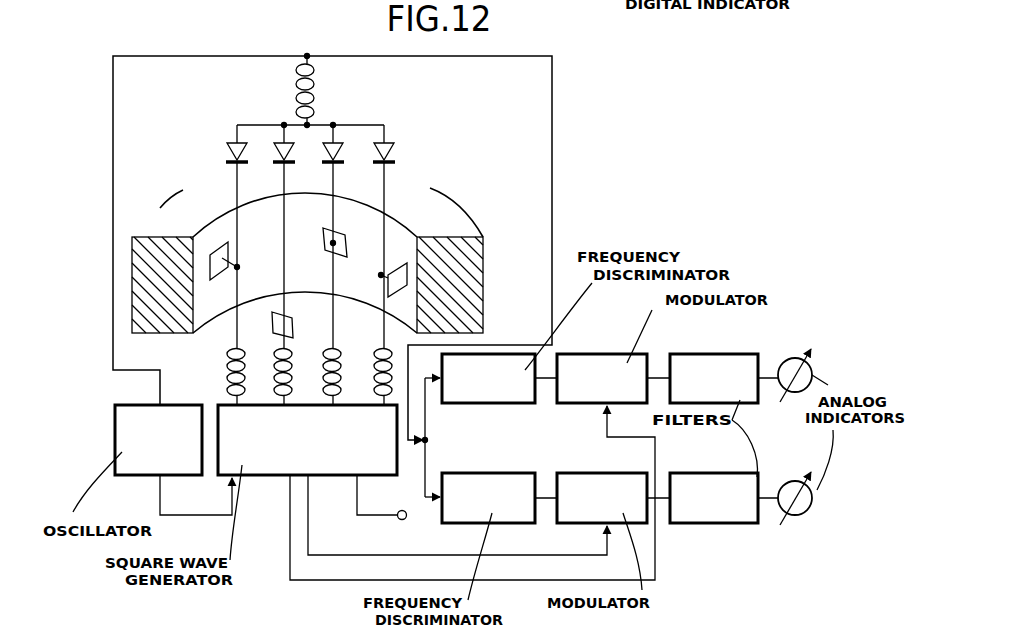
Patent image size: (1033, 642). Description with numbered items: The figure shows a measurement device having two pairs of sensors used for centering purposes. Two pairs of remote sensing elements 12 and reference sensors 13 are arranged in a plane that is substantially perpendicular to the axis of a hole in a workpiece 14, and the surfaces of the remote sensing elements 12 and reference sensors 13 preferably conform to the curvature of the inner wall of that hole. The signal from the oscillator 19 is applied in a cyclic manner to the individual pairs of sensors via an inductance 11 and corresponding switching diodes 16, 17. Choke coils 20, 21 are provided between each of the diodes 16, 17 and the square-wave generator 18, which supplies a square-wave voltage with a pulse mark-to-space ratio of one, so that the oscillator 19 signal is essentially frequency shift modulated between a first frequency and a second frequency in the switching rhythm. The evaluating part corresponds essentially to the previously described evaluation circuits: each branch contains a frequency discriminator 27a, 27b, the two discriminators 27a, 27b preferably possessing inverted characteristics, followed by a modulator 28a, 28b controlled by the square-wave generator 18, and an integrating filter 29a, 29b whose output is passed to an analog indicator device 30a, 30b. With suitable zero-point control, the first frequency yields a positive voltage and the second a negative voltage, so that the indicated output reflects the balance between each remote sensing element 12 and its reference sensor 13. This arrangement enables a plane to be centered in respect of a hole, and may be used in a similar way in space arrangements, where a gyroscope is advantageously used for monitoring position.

The inductance 11 is at (313, 100).
The remote sensing elements 12 is at (224, 259).
The reference sensors 13 is at (330, 242).
The workpiece 14 is at (478, 277).
The switching diode 16 is at (227, 151).
The switching diode 17 is at (275, 153).
The square-wave generator 18 is at (280, 460).
The oscillator 19 is at (152, 442).
The choke coil 20 is at (227, 375).
The choke coil 21 is at (268, 348).
The frequency discriminator 27a is at (472, 390).
The frequency discriminator 27b is at (468, 487).
The modulator 28a is at (587, 363).
The modulator 28b is at (612, 490).
The filter 29a is at (687, 362).
The filter 29b is at (737, 493).
The analog indicator 30a is at (784, 358).
The analog indicator 30b is at (803, 487).